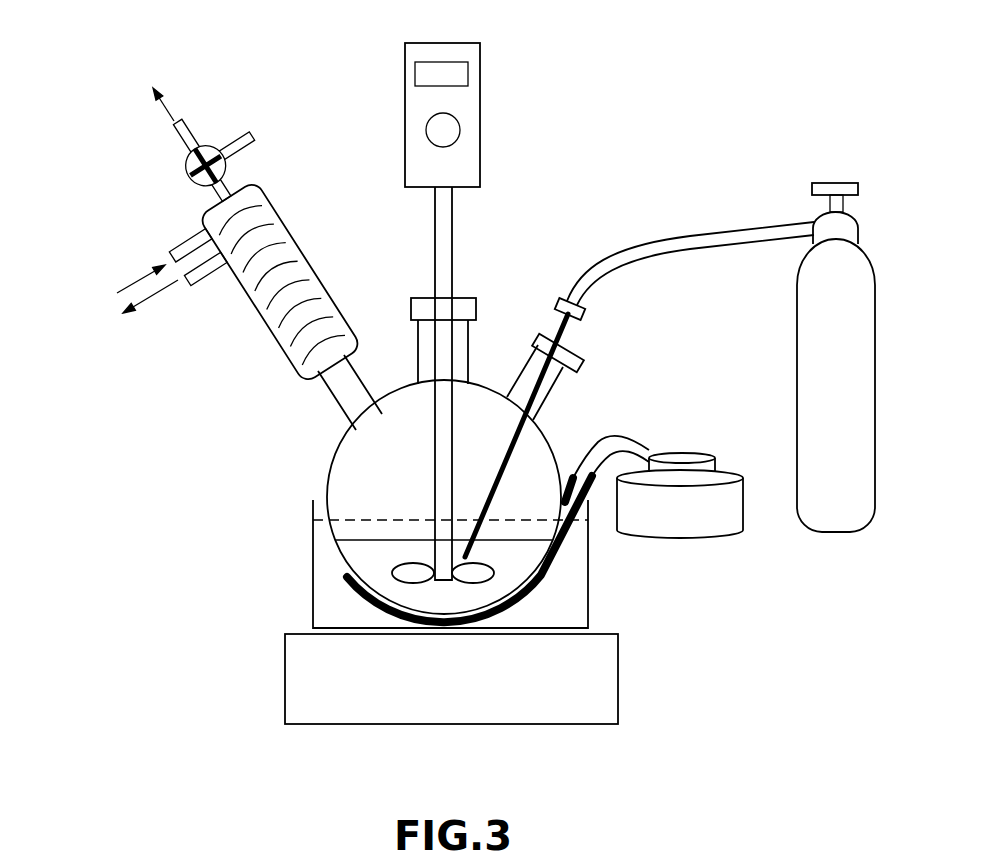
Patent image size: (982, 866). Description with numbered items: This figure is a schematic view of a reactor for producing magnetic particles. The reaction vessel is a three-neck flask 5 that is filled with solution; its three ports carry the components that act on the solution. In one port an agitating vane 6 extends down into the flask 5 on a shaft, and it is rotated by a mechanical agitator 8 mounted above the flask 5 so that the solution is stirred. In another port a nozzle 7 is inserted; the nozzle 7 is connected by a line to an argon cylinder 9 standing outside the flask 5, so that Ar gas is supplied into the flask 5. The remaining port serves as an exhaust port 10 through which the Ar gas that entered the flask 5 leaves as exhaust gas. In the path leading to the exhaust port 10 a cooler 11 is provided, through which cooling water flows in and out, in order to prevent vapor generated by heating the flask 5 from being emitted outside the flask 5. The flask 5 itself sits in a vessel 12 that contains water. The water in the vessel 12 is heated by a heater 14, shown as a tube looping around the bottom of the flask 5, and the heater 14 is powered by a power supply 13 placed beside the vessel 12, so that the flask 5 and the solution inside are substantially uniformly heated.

The three-neck flask 5 is at (338, 447).
The agitating vane 6 is at (413, 567).
The nozzle 7 is at (507, 460).
The mechanical agitator 8 is at (480, 84).
The argon cylinder 9 is at (832, 533).
The exhaust port 10 is at (182, 125).
The cooler 11 is at (310, 247).
The vessel 12 is at (313, 583).
The power supply 13 is at (712, 535).
The heater 14 is at (552, 592).